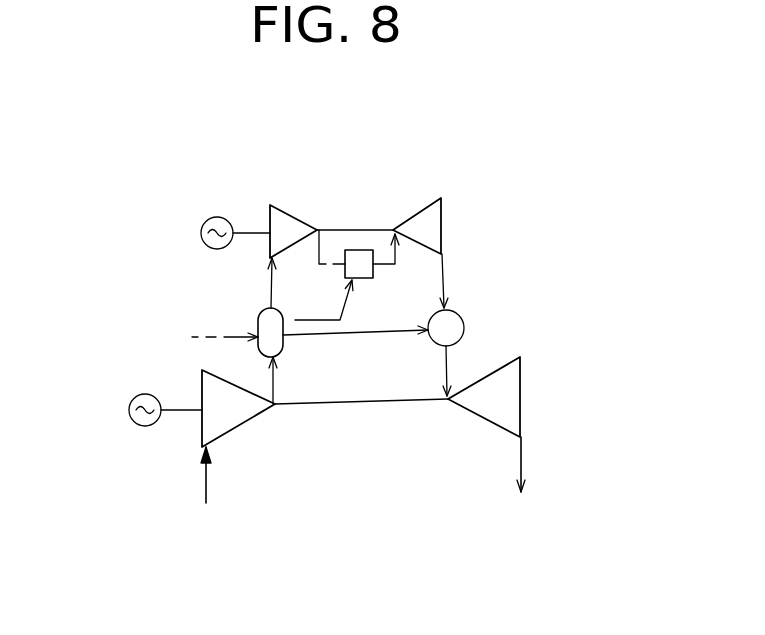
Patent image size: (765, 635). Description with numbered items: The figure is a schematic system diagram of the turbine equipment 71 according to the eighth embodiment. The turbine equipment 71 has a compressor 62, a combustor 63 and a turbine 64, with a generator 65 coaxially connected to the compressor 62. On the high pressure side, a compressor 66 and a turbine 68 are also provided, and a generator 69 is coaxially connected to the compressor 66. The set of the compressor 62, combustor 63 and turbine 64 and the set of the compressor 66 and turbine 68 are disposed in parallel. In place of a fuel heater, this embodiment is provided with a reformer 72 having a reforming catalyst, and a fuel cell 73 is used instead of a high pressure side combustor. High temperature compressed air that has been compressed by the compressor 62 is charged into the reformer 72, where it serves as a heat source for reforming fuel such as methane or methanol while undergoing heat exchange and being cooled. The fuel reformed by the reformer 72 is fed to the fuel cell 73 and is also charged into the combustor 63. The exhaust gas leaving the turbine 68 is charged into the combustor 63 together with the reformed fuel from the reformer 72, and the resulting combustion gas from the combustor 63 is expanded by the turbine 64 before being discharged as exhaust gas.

The compressor 62 is at (245, 425).
The combustor 63 is at (464, 330).
The turbine 64 is at (521, 385).
The generator 65 is at (134, 396).
The compressor 66 is at (285, 205).
The turbine 68 is at (443, 226).
The generator 69 is at (208, 219).
The turbine equipment 71 is at (387, 437).
The reformer 72 is at (258, 316).
The fuel cell 73 is at (363, 250).